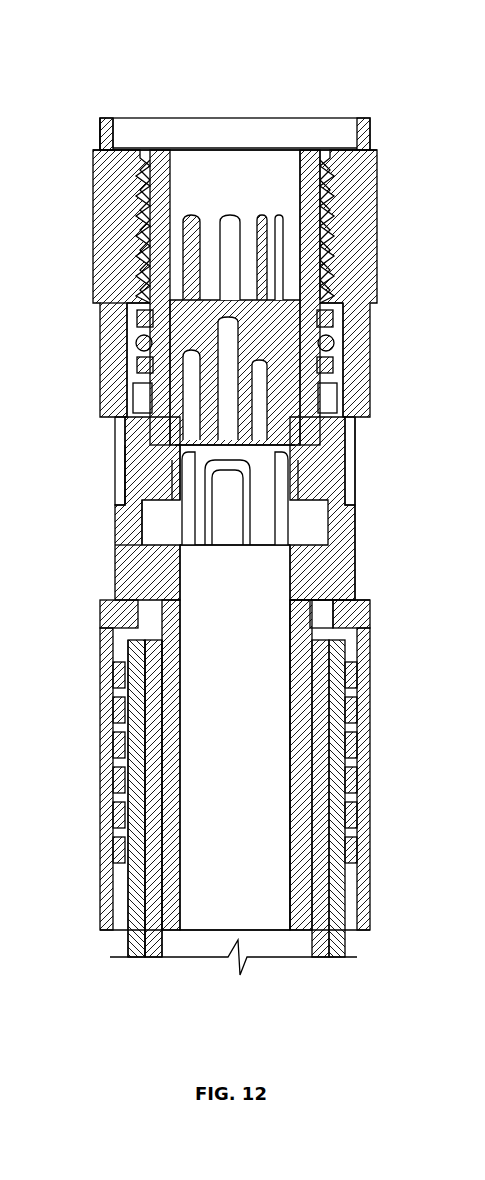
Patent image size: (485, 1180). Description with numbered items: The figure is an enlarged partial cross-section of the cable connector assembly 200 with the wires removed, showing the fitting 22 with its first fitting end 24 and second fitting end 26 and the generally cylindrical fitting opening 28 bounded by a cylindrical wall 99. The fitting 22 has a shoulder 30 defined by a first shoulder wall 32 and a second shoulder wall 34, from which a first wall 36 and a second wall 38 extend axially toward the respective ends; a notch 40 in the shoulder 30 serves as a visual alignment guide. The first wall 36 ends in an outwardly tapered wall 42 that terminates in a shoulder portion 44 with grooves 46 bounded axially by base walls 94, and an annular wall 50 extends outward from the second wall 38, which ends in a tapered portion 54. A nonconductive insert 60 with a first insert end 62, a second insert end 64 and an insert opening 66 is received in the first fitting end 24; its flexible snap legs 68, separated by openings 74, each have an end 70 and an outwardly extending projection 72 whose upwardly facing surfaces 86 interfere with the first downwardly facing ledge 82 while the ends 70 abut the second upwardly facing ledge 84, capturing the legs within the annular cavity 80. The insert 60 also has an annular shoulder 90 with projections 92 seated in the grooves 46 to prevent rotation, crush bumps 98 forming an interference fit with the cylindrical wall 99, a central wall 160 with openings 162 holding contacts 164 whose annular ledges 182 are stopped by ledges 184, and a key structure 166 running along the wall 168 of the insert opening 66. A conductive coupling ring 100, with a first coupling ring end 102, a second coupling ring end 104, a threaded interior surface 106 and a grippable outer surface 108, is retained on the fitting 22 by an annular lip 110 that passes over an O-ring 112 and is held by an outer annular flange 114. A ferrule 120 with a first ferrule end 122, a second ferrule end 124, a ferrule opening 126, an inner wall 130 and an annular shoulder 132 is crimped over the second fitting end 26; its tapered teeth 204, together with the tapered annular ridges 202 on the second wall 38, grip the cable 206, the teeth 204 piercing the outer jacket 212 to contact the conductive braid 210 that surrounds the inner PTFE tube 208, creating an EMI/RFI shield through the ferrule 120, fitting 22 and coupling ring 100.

The cable connector assembly 200 is at (120, 36).
The coupling ring 100 is at (362, 120).
The first coupling ring end 102 is at (366, 140).
The outer surface 108 is at (96, 168).
The threaded interior surface 106 is at (142, 204).
The central wall 160 is at (345, 206).
The downwardly facing annular shoulder 90 is at (330, 232).
The openings 162 is at (160, 262).
The ledges 184 is at (172, 240).
The contacts 164 is at (191, 214).
The key structure 166 is at (303, 152).
The wall 168 is at (318, 152).
The insert 60 is at (150, 150).
The first insert end 62 is at (172, 150).
The insert opening 66 is at (177, 158).
The projections 92 is at (356, 302).
The base walls 94 is at (346, 308).
The cylindrical wall 99 is at (136, 318).
The annular ledges 182 is at (136, 343).
The crush bumps 98 is at (136, 365).
The annular lip 110 is at (134, 398).
The second coupling ring end 104 is at (100, 380).
The shoulder portion 44 is at (112, 294).
The outwardly tapered wall 42 is at (128, 312).
The grooves 46 is at (350, 320).
The O-ring 112 is at (342, 342).
The outer annular flange 114 is at (336, 360).
The first fitting end 24 is at (336, 374).
The first wall 36 is at (334, 396).
The fitting 22 is at (352, 448).
The notch 40 is at (118, 442).
The first shoulder wall 32 is at (356, 422).
The shoulder 30 is at (356, 472).
The openings 74 is at (222, 536).
The second insert end 64 is at (136, 470).
The upwardly facing surfaces 86 is at (150, 482).
The first downwardly facing ledge 82 is at (122, 497).
The outwardly extending projection 72 is at (142, 516).
The snap legs 68 is at (156, 536).
The annular cavity 80 is at (146, 540).
The end 70 is at (152, 582).
The second upwardly facing ledge 84 is at (142, 562).
The second wall 38 is at (116, 612).
The annular shoulder 132 is at (342, 618).
The first ferrule end 122 is at (322, 614).
The second shoulder wall 34 is at (362, 606).
The ferrule 120 is at (372, 882).
The teeth 204 is at (118, 676).
The annular ridges 202 is at (350, 668).
The annular wall 50 is at (132, 652).
The tapered portion 54 is at (162, 930).
The inner wall 130 is at (302, 644).
The second ferrule end 124 is at (348, 932).
The cable 206 is at (358, 956).
The ferrule opening 126 is at (118, 912).
The outer jacket 212 is at (134, 958).
The inner PTFE tube 208 is at (152, 958).
The conductive braid 210 is at (141, 958).
The fitting opening 28 is at (237, 918).
The second fitting end 26 is at (300, 938).